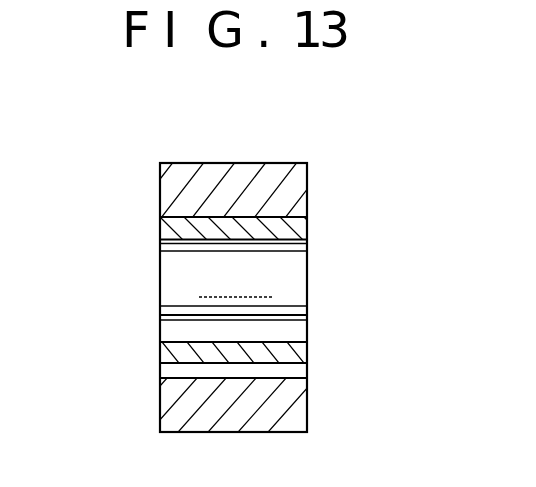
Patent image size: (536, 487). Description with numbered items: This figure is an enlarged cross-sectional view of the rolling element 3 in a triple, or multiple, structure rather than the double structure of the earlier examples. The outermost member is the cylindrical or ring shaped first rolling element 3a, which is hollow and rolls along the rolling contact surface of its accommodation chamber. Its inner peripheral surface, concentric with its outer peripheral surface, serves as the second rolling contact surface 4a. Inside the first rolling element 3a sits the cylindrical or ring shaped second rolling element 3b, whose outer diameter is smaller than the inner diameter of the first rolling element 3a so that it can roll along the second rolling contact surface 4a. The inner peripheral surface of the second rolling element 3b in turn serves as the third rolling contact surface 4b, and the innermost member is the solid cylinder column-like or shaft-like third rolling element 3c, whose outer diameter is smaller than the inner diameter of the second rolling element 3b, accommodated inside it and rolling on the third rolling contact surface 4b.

The rolling element 3 is at (247, 262).
The first rolling element 3a is at (181, 178).
The second rolling contact surface 4a is at (246, 231).
The third rolling contact surface 4b is at (197, 241).
The second rolling element 3b is at (293, 223).
The third rolling element 3c is at (290, 283).